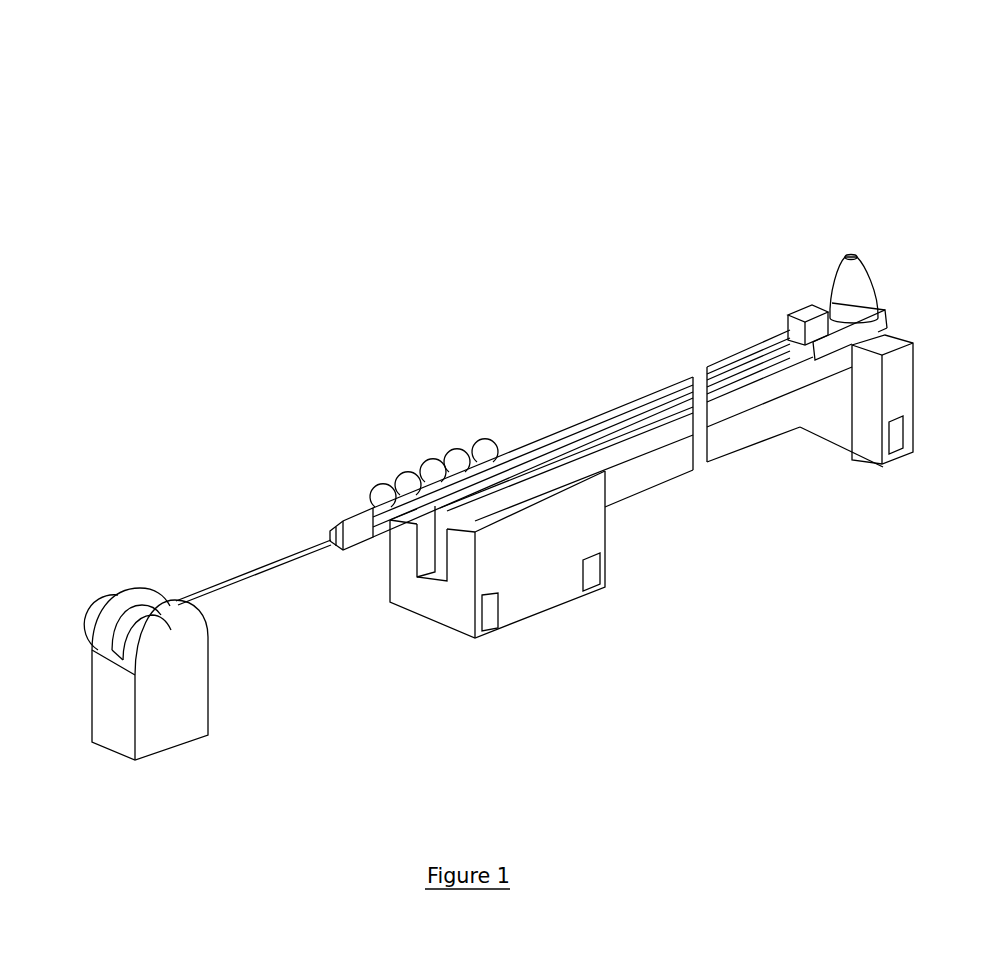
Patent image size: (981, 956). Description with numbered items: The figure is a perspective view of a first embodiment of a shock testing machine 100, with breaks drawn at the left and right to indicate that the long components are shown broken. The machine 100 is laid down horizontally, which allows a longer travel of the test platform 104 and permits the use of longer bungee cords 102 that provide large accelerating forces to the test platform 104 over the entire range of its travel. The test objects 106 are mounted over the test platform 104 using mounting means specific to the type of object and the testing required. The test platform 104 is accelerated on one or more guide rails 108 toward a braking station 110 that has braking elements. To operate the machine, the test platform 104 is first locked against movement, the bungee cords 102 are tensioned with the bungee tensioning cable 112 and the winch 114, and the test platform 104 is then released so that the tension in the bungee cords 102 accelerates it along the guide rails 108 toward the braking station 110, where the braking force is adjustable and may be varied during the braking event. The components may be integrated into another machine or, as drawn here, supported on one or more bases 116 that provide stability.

The shock testing machine 100 is at (823, 80).
The bungee cords 102 is at (592, 406).
The test platform 104 is at (878, 296).
The test objects 106 is at (787, 288).
The guide rails 108 is at (740, 378).
The braking station 110 is at (523, 512).
The bungee tensioning cable 112 is at (308, 527).
The winch 114 is at (139, 573).
The bases 116 is at (172, 742).